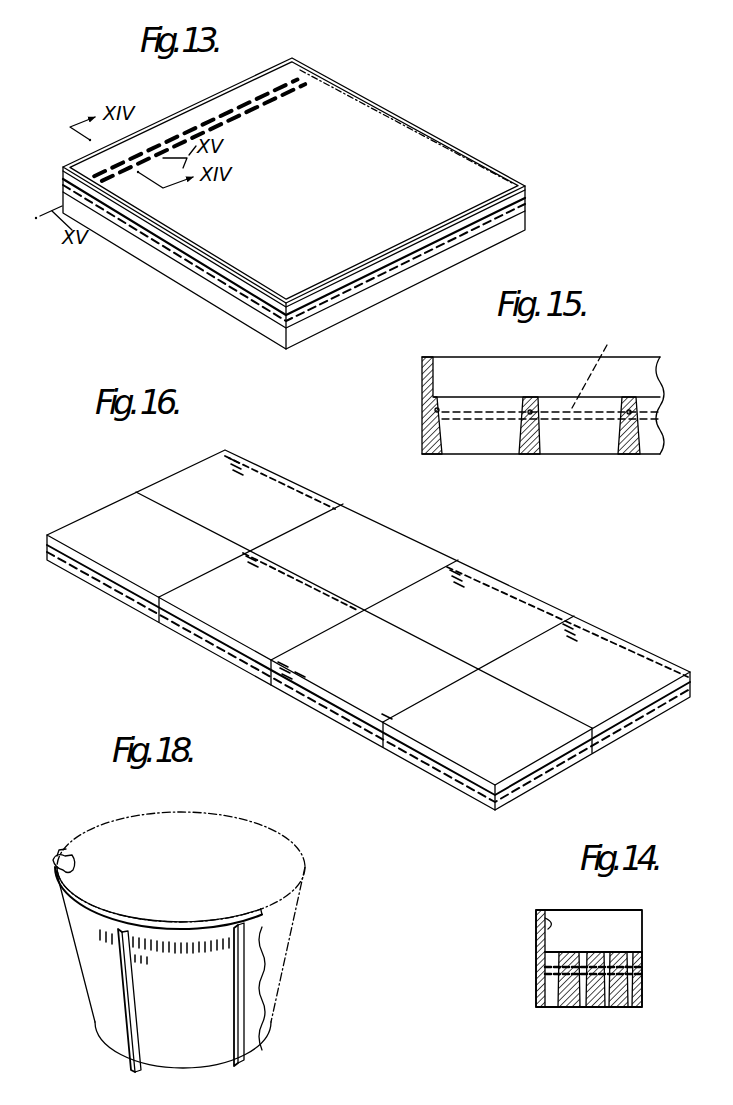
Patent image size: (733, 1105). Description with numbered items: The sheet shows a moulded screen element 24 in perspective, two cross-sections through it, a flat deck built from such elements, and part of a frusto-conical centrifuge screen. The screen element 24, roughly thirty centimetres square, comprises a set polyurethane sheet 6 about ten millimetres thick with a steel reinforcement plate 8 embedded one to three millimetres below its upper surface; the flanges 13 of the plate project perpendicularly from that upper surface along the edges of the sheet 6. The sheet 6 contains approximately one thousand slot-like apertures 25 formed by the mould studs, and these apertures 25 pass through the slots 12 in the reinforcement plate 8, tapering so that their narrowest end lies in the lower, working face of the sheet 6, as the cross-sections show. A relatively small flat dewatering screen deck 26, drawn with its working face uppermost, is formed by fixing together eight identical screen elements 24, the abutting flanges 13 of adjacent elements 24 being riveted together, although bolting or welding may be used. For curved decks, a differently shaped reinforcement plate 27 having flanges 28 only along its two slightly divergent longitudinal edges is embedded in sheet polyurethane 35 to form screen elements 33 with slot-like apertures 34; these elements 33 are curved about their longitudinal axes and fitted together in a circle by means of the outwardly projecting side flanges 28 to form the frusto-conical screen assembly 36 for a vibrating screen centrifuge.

In FIG. 13, the polyurethane sheet 6 is at (133, 241).
In FIG. 15, the polyurethane sheet 6 is at (425, 426).
In FIG. 16, the polyurethane sheet 6 is at (110, 577).
In FIG. 14, the polyurethane sheet 6 is at (545, 995).
In FIG. 13, the reinforcement plate 8 is at (516, 212).
In FIG. 15, the reinforcement plate 8 is at (538, 400).
In FIG. 14, the reinforcement plate 8 is at (620, 952).
In FIG. 15, the slots 12 is at (535, 418).
In FIG. 14, the slots 12 is at (562, 988).
In FIG. 13, the flanges 13 is at (292, 58).
In FIG. 15, the flanges 13 is at (432, 373).
In FIG. 16, the flanges 13 is at (160, 622).
In FIG. 14, the flanges 13 is at (545, 920).
In FIG. 15, the screen element 24 is at (410, 397).
In FIG. 16, the screen element 24 is at (225, 563).
In FIG. 14, the screen element 24 is at (536, 977).
In FIG. 13, the slot-like apertures 25 is at (147, 146).
In FIG. 15, the slot-like apertures 25 is at (510, 437).
In FIG. 16, the slot-like apertures 25 is at (527, 597).
In FIG. 14, the slot-like apertures 25 is at (585, 1006).
In FIG. 16, the dewatering screen deck 26 is at (640, 733).
In FIG. 18, the reinforcement plate 27 is at (117, 930).
In FIG. 18, the flanges 28 is at (121, 966).
In FIG. 18, the screen elements 33 is at (120, 1018).
In FIG. 18, the slot-like apertures 34 is at (73, 853).
In FIG. 18, the sheet polyurethane 35 is at (193, 925).
In FIG. 18, the frusto-conical screen assembly 36 is at (277, 948).